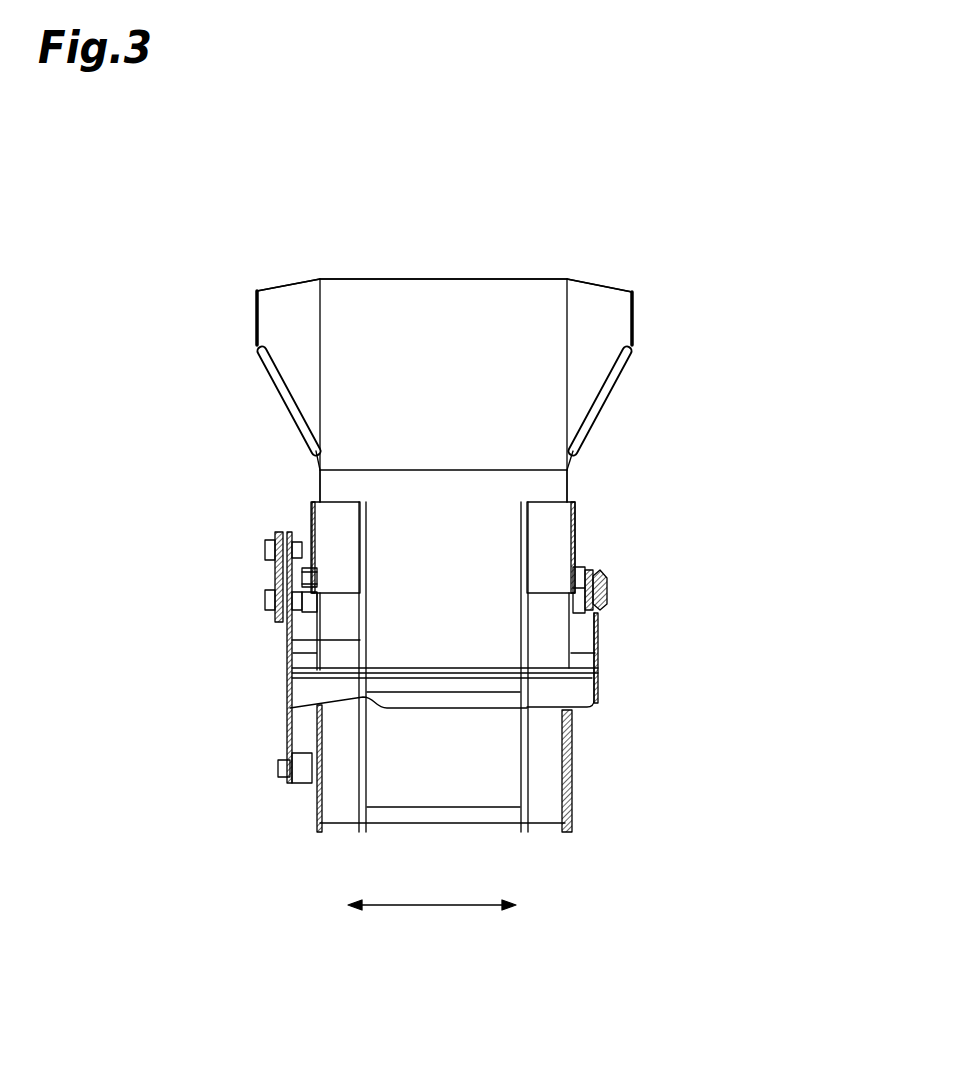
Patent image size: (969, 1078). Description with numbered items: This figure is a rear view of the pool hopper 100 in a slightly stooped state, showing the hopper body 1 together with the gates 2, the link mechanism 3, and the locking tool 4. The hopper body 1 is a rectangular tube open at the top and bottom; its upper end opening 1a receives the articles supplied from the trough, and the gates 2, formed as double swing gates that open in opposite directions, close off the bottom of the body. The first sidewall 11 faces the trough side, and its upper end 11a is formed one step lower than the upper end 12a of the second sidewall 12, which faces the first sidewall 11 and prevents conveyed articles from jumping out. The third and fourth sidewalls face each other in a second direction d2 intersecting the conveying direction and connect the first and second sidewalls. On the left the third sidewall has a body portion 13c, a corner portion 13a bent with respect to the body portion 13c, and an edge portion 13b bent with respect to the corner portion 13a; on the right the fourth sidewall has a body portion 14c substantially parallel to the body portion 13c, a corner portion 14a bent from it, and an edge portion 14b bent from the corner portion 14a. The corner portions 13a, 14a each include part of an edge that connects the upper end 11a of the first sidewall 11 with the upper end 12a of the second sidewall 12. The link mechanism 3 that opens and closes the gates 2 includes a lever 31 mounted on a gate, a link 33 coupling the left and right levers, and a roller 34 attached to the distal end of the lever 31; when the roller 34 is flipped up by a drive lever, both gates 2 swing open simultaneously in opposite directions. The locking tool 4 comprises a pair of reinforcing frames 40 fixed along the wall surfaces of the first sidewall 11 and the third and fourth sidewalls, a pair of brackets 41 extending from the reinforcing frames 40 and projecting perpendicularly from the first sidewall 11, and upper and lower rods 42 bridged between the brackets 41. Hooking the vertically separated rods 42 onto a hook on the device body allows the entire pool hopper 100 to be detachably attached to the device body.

The pool hopper 100 is at (722, 365).
The hopper body 1 is at (450, 549).
The upper end opening 1a is at (532, 268).
The first sidewall 11 is at (571, 475).
The upper end of the first sidewall 11a is at (490, 470).
The second sidewall 12 is at (455, 313).
The upper end of the second sidewall 12a is at (357, 279).
The corner portion 13a is at (288, 318).
The edge portion 13b is at (303, 408).
The body portion 13c is at (318, 476).
The corner portion 14a is at (607, 323).
The edge portion 14b is at (598, 398).
The body portion 14c is at (488, 507).
The gates 2 is at (478, 739).
The link mechanism 3 is at (243, 536).
The lever 31 is at (287, 740).
The link 33 is at (272, 575).
The roller 34 is at (303, 777).
The locking tool 4 is at (370, 773).
The reinforcing frames 40 is at (330, 522).
The brackets 41 is at (292, 640).
The rods 42 is at (402, 687).
The second direction d2 is at (432, 920).